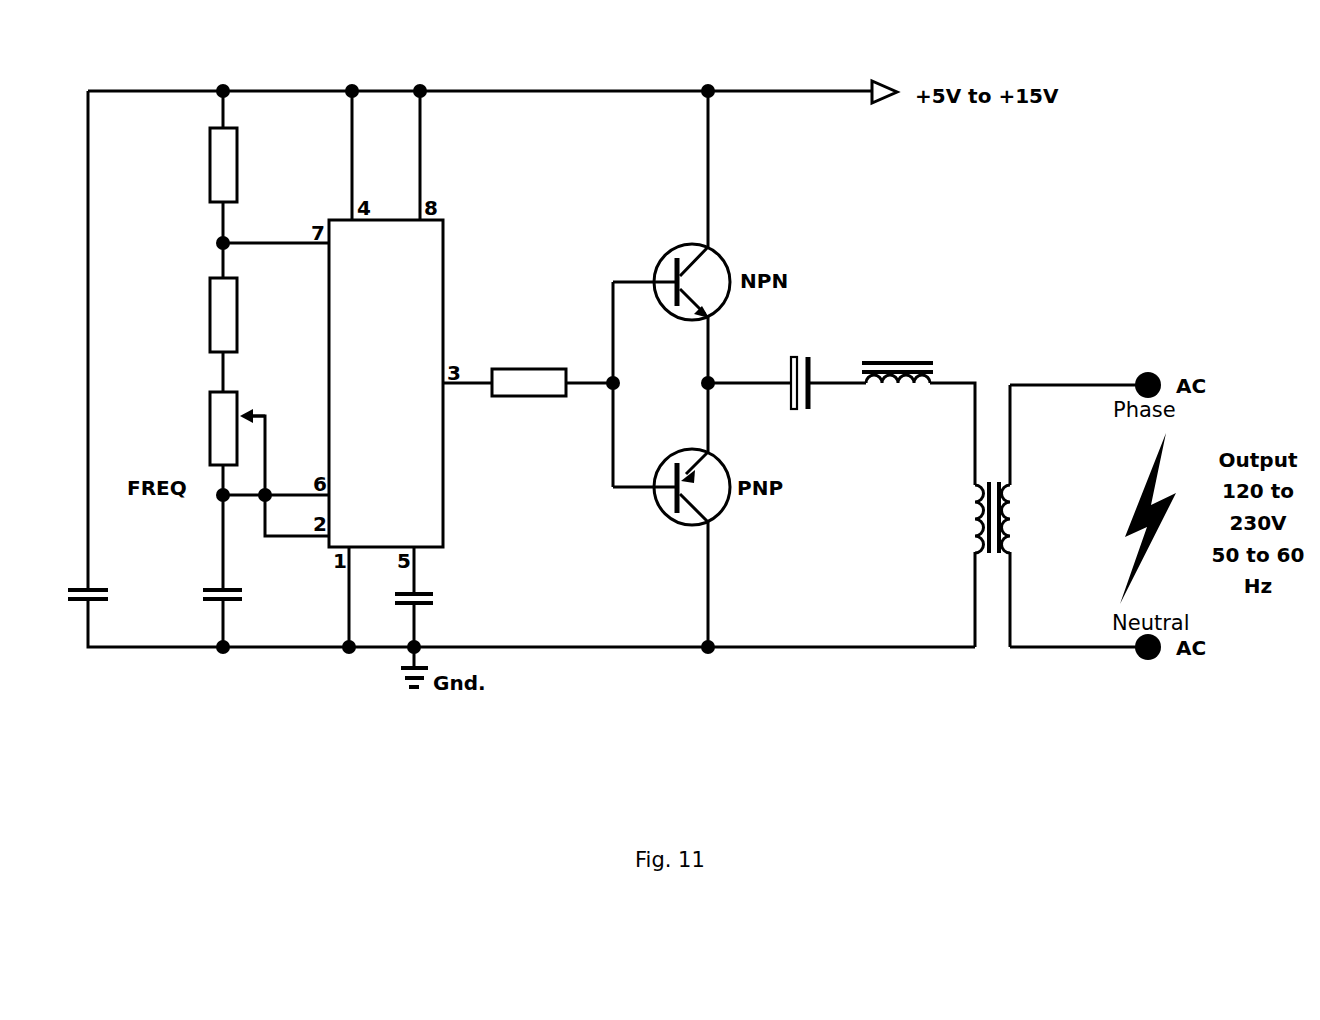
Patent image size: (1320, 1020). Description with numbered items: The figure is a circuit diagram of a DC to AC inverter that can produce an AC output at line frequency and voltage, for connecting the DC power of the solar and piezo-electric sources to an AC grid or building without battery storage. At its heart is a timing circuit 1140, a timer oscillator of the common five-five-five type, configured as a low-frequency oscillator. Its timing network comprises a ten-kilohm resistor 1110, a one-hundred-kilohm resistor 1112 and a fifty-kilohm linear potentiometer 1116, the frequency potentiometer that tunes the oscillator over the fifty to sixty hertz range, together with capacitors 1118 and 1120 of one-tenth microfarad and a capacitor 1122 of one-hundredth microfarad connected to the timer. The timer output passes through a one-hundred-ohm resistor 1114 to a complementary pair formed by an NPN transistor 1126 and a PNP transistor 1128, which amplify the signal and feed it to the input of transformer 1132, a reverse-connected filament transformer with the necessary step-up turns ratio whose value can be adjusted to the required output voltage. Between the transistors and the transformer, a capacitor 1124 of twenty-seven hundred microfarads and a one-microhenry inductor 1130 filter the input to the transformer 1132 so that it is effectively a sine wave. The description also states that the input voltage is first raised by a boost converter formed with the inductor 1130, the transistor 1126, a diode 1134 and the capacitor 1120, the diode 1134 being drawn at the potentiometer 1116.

The resistor 1110 is at (210, 165).
The resistor 1112 is at (210, 310).
The linear potentiometer 1116 is at (210, 420).
The diode 1134 is at (250, 414).
The capacitor 1118 is at (68, 590).
The capacitor 1120 is at (203, 590).
The capacitor 1122 is at (433, 600).
The resistor 1114 is at (530, 369).
The NPN transistor 1126 is at (680, 248).
The PNP transistor 1128 is at (672, 518).
The capacitor 1124 is at (797, 410).
The inductor 1130 is at (933, 362).
The transformer 1132 is at (975, 497).
The timing circuit 1140 is at (386, 383).